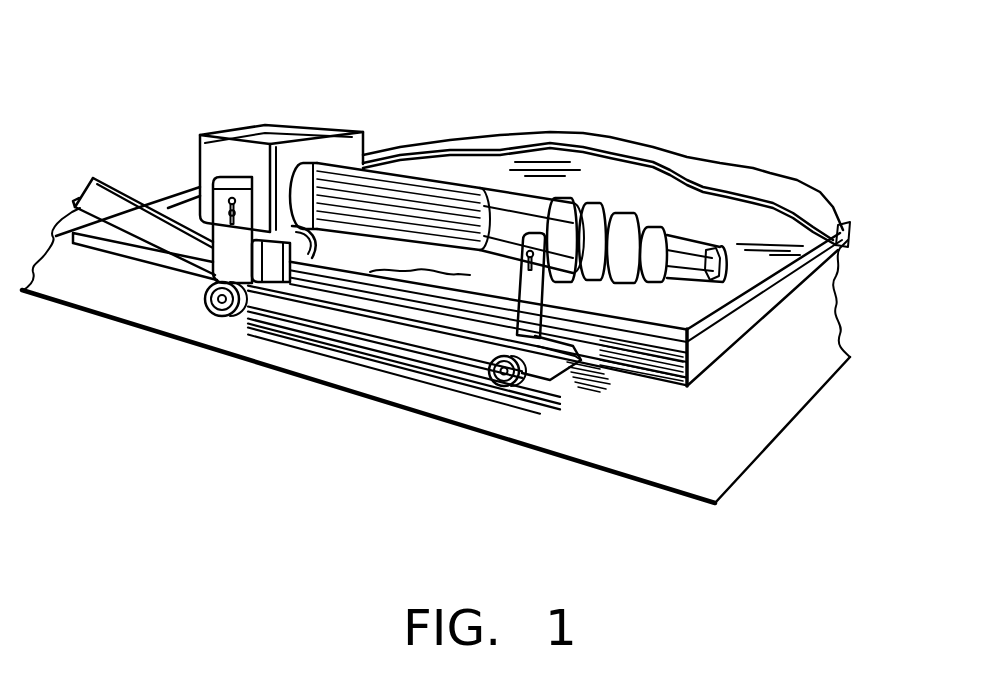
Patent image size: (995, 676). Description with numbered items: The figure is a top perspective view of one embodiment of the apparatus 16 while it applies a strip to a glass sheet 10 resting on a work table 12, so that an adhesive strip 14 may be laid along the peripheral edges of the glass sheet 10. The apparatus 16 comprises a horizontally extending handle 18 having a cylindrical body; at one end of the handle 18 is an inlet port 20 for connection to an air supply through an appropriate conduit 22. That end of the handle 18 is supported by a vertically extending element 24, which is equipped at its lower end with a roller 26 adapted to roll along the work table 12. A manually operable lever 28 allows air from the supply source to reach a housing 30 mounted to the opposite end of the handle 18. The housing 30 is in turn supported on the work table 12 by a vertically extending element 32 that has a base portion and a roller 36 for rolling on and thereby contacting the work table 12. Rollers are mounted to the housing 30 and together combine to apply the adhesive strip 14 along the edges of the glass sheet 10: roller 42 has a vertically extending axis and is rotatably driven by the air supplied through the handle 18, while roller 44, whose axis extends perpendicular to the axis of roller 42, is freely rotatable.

The glass sheet 10 is at (590, 143).
The work table 12 is at (660, 460).
The adhesive strip 14 is at (132, 198).
The apparatus 16 is at (422, 160).
The handle 18 is at (449, 188).
The inlet port 20 is at (607, 210).
The conduit 22 is at (683, 247).
The vertically extending element 24 is at (563, 378).
The roller 26 is at (495, 384).
The manually operable lever 28 is at (452, 258).
The housing 30 is at (300, 124).
The vertically extending element 32 is at (228, 243).
The roller 36 is at (208, 305).
The roller 42 is at (268, 250).
The roller 44 is at (305, 226).